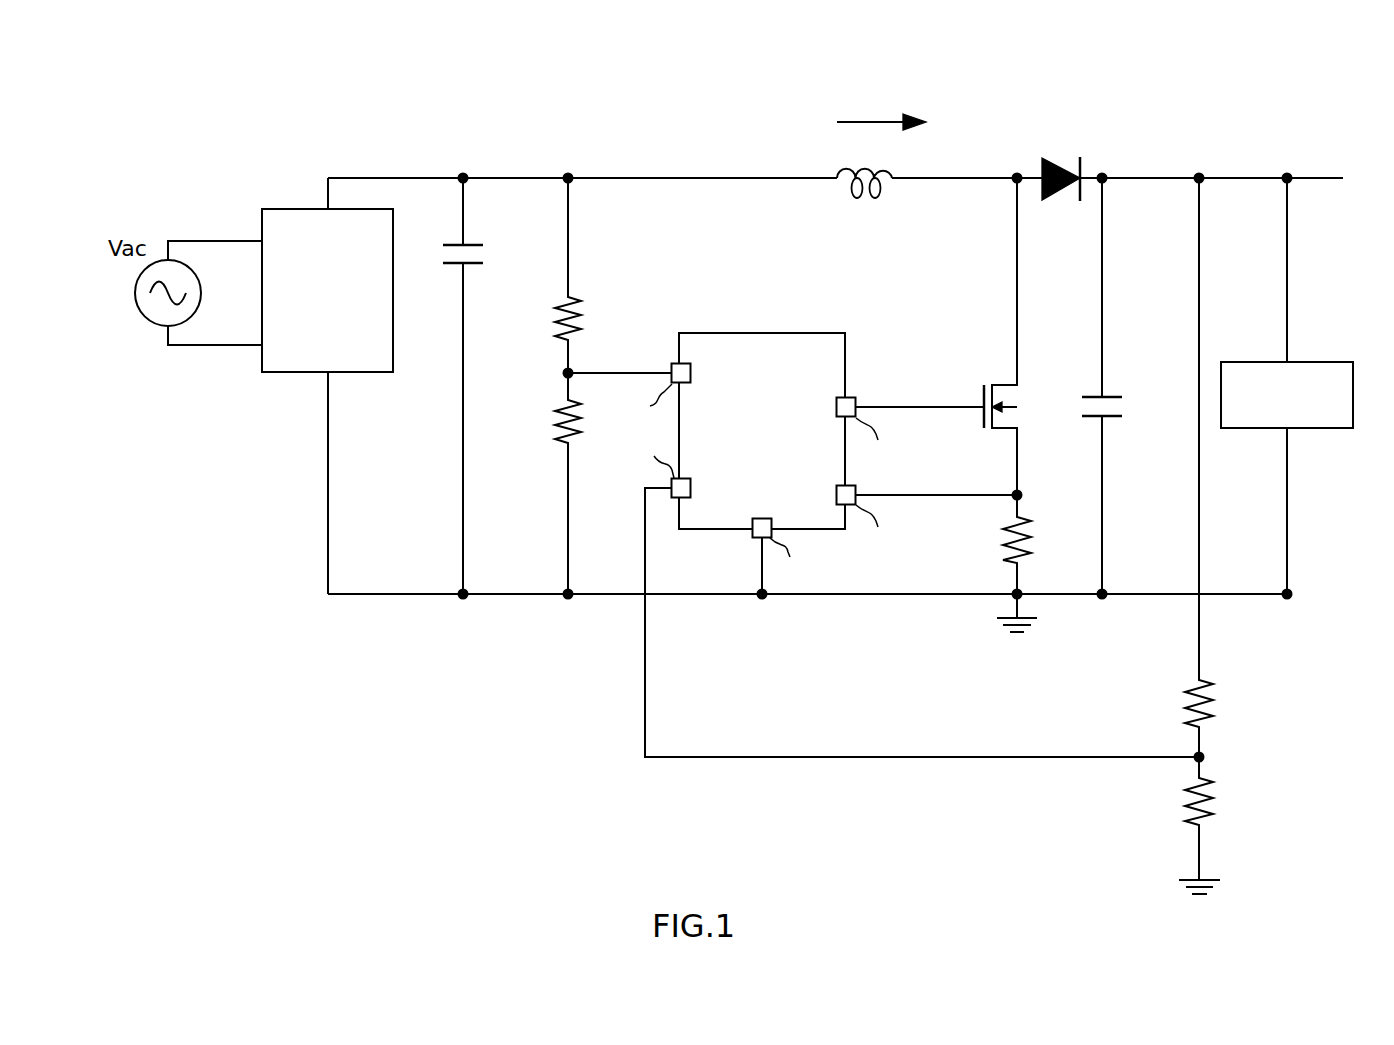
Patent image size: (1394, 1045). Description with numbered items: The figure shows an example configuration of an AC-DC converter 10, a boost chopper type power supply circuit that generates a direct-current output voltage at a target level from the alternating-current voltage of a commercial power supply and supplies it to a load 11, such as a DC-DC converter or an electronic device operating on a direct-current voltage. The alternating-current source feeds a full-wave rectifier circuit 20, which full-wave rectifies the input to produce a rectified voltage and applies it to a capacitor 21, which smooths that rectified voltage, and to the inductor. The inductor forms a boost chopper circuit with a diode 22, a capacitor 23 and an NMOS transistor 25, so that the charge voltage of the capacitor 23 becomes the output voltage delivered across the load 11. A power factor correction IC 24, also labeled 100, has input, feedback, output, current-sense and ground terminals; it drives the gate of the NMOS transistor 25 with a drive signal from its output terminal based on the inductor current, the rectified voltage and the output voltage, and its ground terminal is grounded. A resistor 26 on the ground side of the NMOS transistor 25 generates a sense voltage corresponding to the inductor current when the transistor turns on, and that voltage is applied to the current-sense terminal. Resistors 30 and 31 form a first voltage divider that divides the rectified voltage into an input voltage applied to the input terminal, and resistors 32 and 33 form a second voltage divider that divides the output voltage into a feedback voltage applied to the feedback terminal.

The AC-DC converter 10 is at (1210, 110).
The load 11 is at (1335, 361).
The full-wave rectifier circuit 20 is at (266, 207).
The capacitor 21 is at (453, 266).
The diode 22 is at (1047, 157).
The capacitor 23 is at (1114, 396).
The power factor correction IC 24 is at (847, 338).
The power factor correction IC 100 is at (789, 458).
The NMOS transistor 25 is at (1021, 425).
The resistor 26 is at (1026, 530).
The resistor 30 is at (560, 307).
The resistor 31 is at (560, 414).
The resistor 32 is at (1210, 694).
The resistor 33 is at (1210, 794).